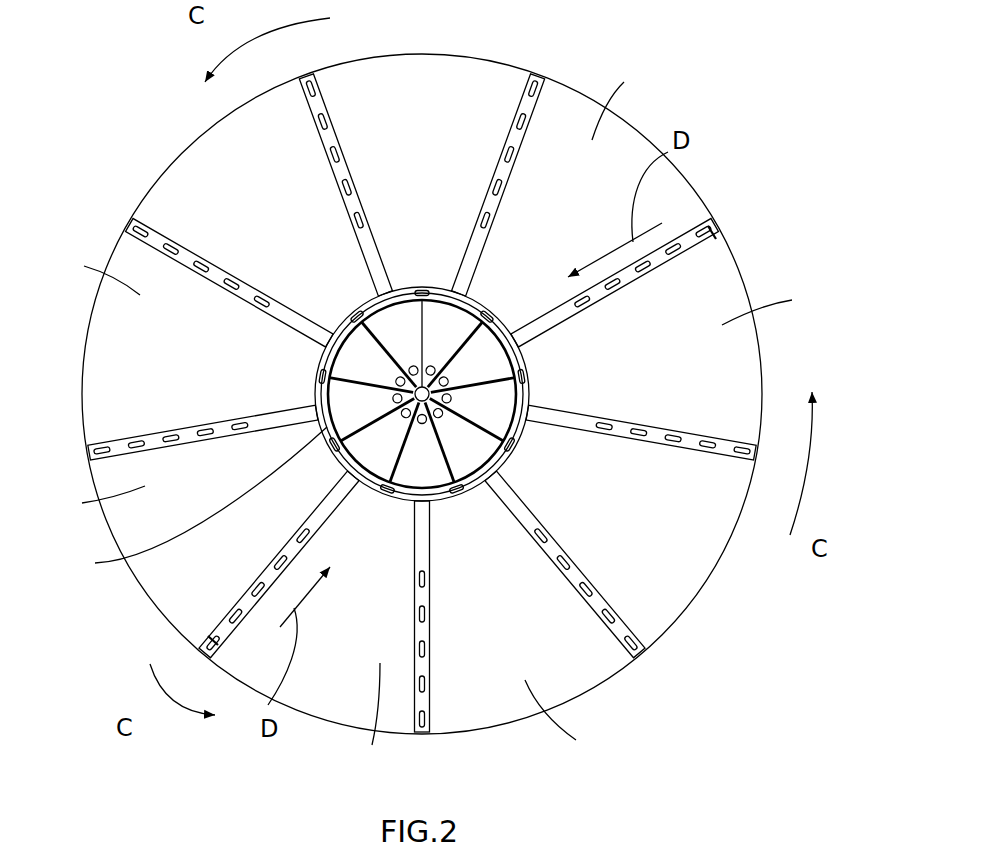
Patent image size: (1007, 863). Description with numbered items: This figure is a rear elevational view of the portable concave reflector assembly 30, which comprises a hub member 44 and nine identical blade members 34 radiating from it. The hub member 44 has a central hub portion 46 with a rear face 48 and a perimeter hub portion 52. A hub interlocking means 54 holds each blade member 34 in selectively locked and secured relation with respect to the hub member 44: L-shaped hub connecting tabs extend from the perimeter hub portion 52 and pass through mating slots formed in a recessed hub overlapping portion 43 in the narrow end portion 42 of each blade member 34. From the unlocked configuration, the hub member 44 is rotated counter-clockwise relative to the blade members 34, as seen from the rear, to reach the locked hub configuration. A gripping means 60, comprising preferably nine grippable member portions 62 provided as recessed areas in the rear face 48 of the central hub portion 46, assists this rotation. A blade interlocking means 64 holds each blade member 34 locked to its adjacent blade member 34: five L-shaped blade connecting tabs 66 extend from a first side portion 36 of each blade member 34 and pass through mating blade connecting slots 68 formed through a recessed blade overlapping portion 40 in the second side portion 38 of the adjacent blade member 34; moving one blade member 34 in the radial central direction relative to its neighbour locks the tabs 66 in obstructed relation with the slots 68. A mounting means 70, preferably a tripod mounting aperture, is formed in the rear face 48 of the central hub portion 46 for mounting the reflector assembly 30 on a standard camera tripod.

The portable concave reflector assembly 30 is at (718, 108).
The blade member 34 is at (434, 413).
The first side portion 36 is at (440, 665).
The second side portion 38 is at (575, 593).
The recessed blade overlapping portion 40 is at (735, 432).
The narrow end portion 42 is at (545, 368).
The recessed hub overlapping portion 43 is at (367, 493).
The hub member 44 is at (443, 320).
The central hub portion 46 is at (350, 365).
The rear face 48 is at (503, 418).
The perimeter hub portion 52 is at (318, 397).
The hub interlocking means 54 is at (490, 305).
The gripping means 60 is at (361, 306).
The grippable member portion 62 is at (512, 457).
The blade interlocking means 64 is at (340, 140).
The L-shaped blade connecting tab 66 is at (714, 222).
The mating blade connecting slot 68 is at (700, 227).
The mounting means 70 is at (193, 503).